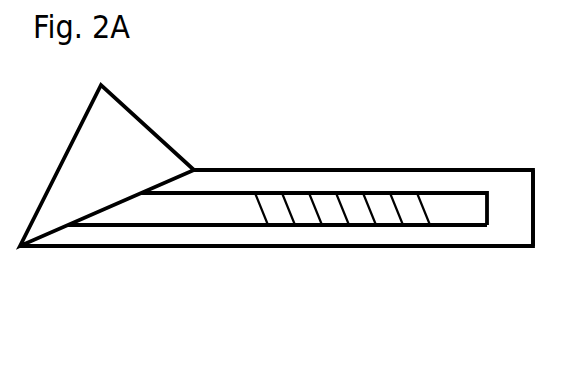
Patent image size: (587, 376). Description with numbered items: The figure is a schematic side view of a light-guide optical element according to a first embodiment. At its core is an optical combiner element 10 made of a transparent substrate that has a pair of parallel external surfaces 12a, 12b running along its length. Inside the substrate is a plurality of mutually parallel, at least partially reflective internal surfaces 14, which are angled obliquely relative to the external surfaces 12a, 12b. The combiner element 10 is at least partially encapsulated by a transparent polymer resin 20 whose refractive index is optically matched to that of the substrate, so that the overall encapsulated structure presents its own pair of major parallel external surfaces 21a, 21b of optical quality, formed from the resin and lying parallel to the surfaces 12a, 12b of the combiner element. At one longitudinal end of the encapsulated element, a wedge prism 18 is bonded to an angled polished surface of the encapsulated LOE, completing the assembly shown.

The optical combiner element 10 is at (473, 210).
The external surface 12a is at (213, 193).
The external surface 12b is at (212, 225).
The partially reflective internal surfaces 14 is at (289, 208).
The wedge prism 18 is at (115, 137).
The transparent polymer resin 20 is at (520, 207).
The major parallel external surface 21a is at (381, 170).
The major parallel external surface 21b is at (383, 247).